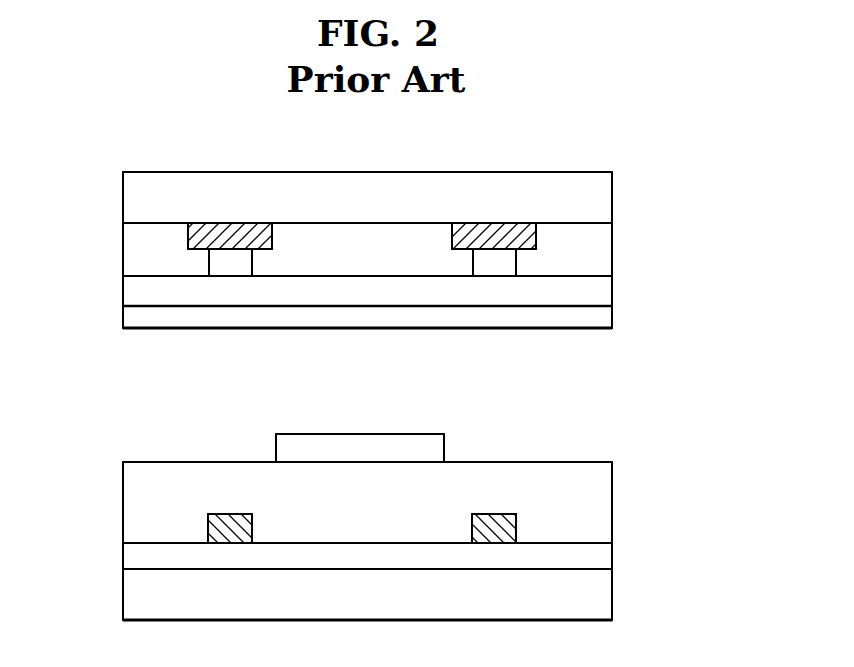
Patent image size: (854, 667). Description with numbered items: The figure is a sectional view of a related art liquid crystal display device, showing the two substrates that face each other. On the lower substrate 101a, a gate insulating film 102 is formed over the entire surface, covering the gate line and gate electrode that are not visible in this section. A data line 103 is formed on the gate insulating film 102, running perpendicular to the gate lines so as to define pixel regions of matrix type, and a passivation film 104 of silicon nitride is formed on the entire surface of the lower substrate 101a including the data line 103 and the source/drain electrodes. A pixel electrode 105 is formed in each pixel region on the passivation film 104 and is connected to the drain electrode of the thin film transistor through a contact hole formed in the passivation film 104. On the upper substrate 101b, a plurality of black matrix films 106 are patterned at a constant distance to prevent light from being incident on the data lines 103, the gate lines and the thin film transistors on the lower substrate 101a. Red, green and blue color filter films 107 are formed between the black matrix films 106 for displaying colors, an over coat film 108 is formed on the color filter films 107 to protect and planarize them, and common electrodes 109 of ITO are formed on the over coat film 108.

The lower substrate 101a is at (603, 606).
The upper substrate 101b is at (603, 200).
The gate insulating film 102 is at (603, 561).
The data line 103 is at (492, 525).
The passivation film 104 is at (603, 501).
The pixel electrode 105 is at (364, 440).
The black matrix film 106 is at (487, 235).
The color filter film 107 is at (603, 251).
The over coat film 108 is at (603, 295).
The common electrode 109 is at (603, 331).